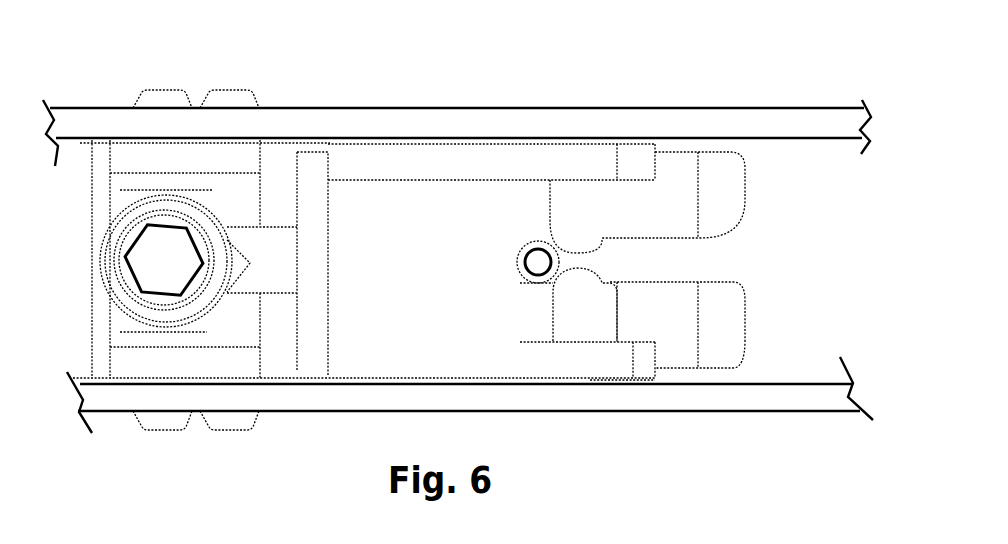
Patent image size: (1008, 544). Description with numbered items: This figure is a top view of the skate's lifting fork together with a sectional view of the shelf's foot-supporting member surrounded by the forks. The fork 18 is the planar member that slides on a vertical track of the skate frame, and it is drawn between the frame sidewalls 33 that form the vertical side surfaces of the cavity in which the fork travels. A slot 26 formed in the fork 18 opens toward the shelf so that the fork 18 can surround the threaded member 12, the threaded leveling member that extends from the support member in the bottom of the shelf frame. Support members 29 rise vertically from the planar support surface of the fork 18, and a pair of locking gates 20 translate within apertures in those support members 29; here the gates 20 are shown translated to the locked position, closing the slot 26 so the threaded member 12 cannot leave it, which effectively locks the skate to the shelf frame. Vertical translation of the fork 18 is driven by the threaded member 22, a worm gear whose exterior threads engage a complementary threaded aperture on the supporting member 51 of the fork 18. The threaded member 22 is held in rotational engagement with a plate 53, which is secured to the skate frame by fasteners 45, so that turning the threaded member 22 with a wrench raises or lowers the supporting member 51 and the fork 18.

The threaded member 12 is at (533, 258).
The fork 18 is at (672, 187).
The locking gates 20 is at (597, 287).
The threaded member 22 is at (176, 272).
The slot 26 is at (702, 263).
The support members 29 is at (353, 172).
The frame sidewalls 33 is at (303, 443).
The fasteners 45 is at (203, 472).
The supporting member 51 is at (255, 237).
The plate 53 is at (128, 148).